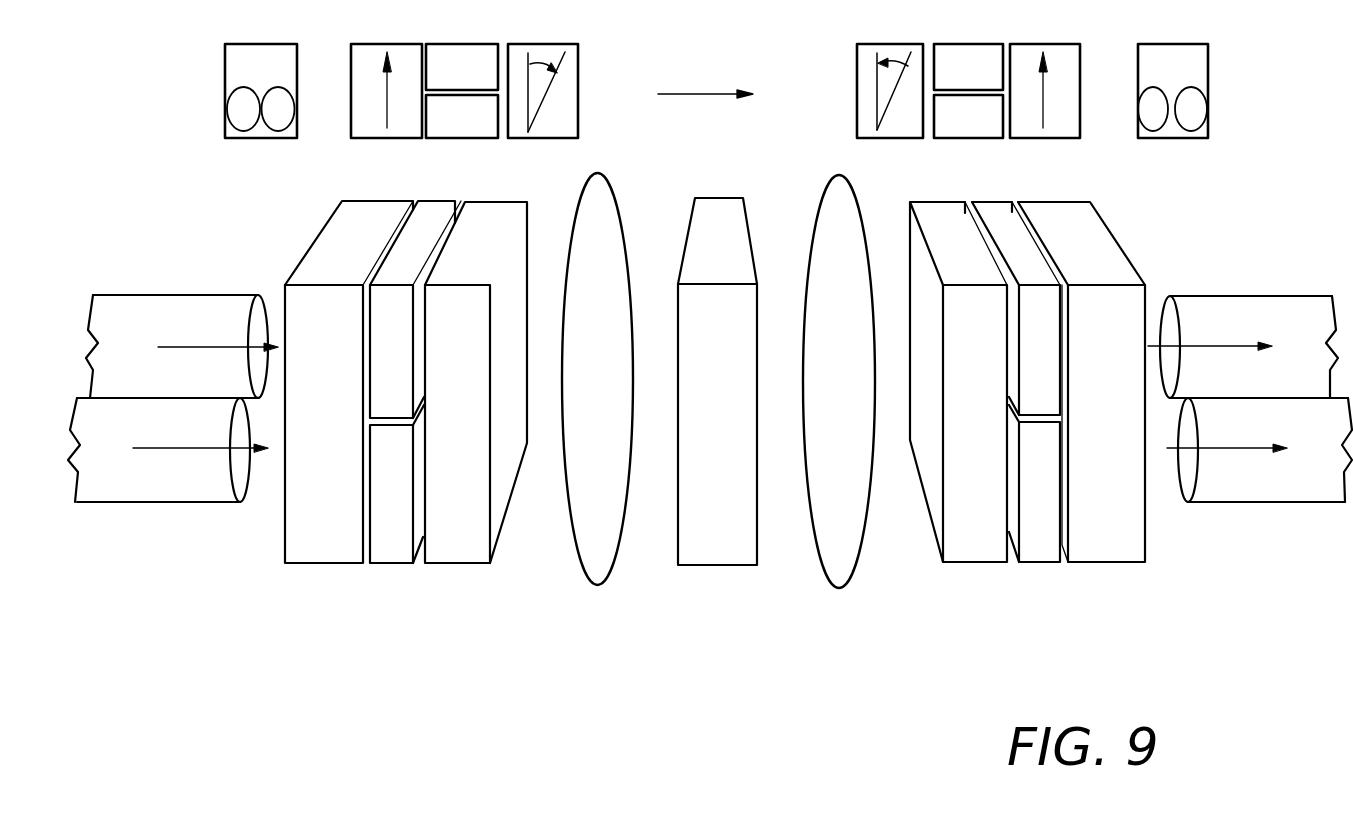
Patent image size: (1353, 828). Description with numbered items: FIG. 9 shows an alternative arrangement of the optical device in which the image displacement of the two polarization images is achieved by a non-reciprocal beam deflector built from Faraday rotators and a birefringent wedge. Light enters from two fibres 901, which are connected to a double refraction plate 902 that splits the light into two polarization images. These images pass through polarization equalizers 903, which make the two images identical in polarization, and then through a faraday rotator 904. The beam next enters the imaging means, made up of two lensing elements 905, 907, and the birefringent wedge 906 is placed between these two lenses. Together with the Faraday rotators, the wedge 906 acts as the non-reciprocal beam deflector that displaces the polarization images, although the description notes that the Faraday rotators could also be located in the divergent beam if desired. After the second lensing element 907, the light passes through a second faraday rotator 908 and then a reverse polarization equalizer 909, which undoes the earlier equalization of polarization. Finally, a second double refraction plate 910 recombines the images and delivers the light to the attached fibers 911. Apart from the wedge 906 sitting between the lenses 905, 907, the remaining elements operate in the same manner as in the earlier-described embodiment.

The fibres 901 is at (188, 515).
The double refraction plate 902 is at (317, 548).
The polarization equalizers 903 is at (395, 565).
The faraday rotator 904 is at (467, 557).
The lensing element 905 is at (598, 585).
The birefringent wedge 906 is at (725, 557).
The lensing element 907 is at (837, 588).
The faraday rotator 908 is at (972, 552).
The reverse polarization equalizer 909 is at (1038, 563).
The double refraction plate 910 is at (1115, 557).
The attached fibers 911 is at (1248, 519).